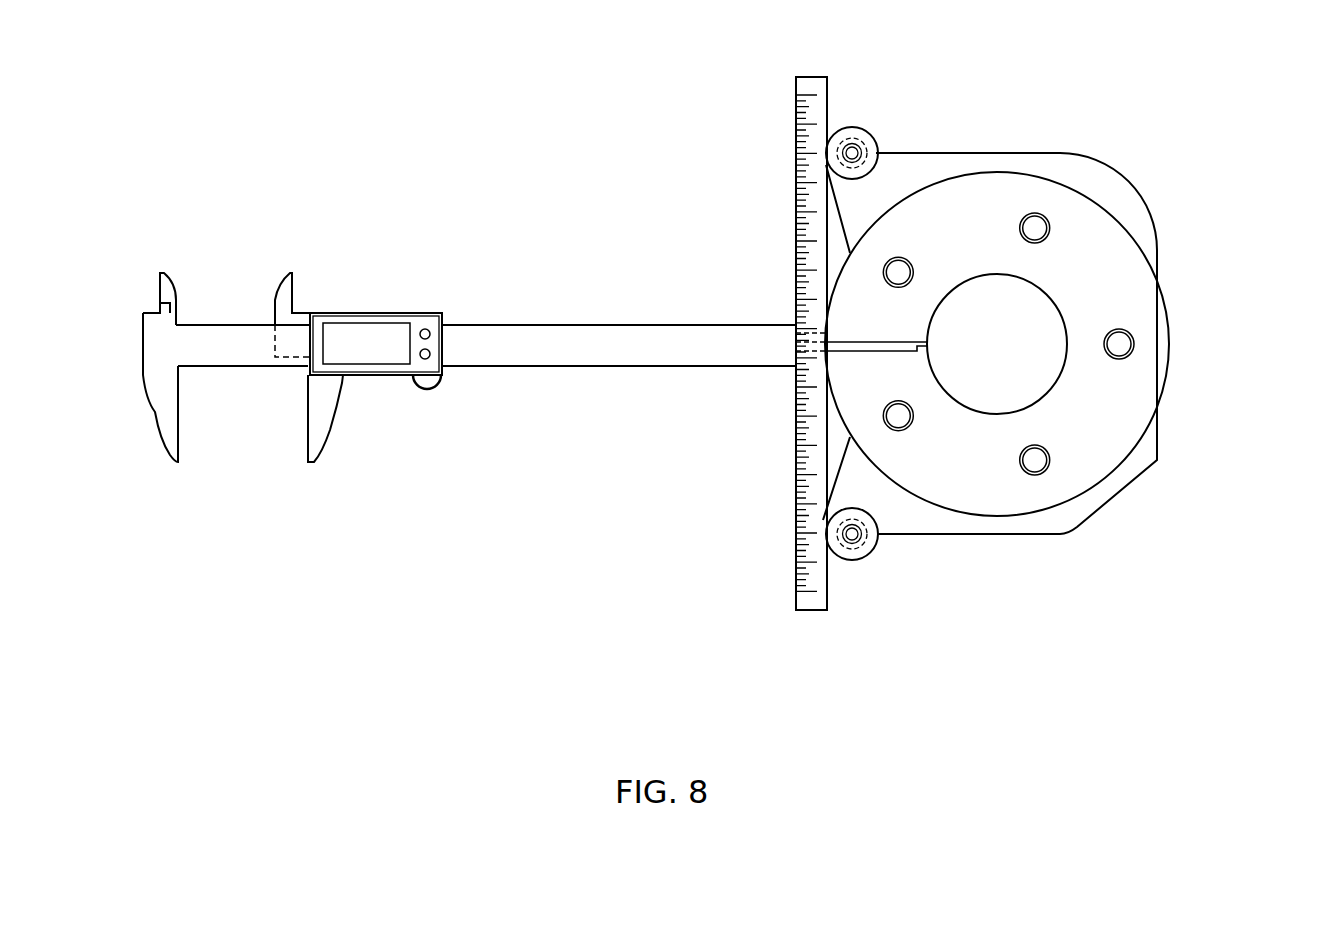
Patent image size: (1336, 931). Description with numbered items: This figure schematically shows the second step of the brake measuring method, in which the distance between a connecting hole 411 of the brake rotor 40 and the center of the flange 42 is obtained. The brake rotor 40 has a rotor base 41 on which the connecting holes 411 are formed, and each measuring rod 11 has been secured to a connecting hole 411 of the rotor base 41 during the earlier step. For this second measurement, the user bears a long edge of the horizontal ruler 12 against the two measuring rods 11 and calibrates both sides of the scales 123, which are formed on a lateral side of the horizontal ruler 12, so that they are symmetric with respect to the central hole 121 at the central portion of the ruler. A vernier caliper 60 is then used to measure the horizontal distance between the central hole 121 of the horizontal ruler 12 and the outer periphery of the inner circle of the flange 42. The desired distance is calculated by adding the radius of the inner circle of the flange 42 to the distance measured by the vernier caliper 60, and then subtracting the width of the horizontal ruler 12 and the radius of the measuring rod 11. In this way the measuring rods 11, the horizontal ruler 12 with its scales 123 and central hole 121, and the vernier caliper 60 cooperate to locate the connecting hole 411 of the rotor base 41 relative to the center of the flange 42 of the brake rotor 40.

The vernier caliper 60 is at (404, 320).
The horizontal ruler 12 is at (744, 343).
The scales 123 is at (796, 189).
The central hole 121 is at (798, 349).
The brake rotor 40 is at (1041, 290).
The rotor base 41 is at (990, 307).
The connecting hole 411 is at (853, 140).
The measuring rod 11 is at (873, 143).
The flange 42 is at (1145, 300).